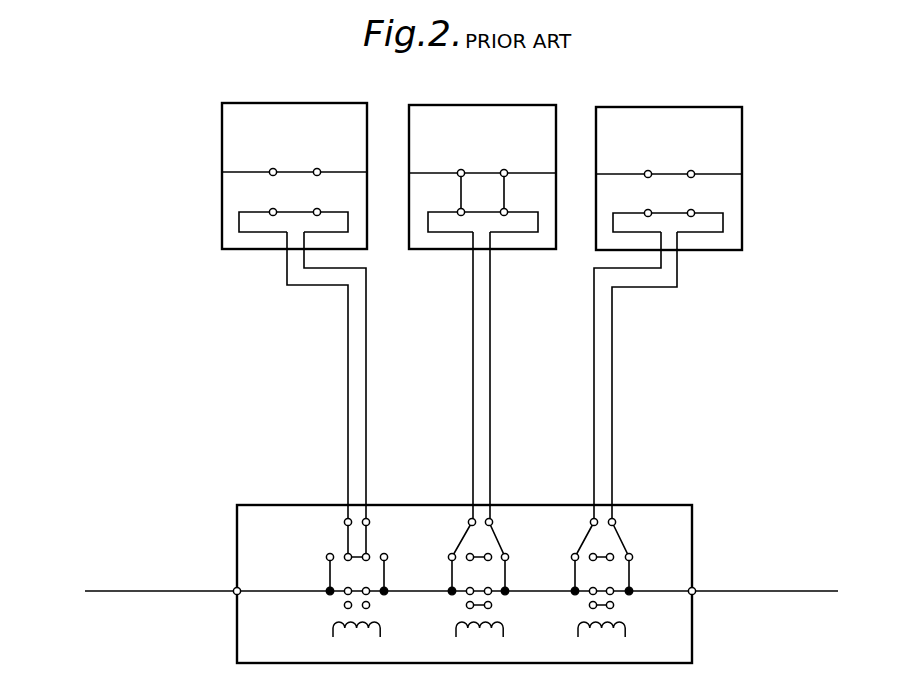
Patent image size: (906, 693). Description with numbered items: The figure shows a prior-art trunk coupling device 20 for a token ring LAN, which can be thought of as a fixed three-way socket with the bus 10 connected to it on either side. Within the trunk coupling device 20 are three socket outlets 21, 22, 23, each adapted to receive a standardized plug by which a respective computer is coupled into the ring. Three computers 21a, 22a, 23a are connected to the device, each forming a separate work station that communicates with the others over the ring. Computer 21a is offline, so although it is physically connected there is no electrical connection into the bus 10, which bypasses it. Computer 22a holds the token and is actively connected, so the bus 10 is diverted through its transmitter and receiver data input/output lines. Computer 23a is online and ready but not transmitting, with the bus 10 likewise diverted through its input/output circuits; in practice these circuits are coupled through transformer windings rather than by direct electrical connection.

The bus 10 is at (157, 590).
The trunk coupling device 20 is at (467, 552).
The socket outlet 21 is at (343, 569).
The socket outlet 22 is at (475, 571).
The socket outlet 23 is at (612, 574).
The computer 21a is at (293, 112).
The computer 22a is at (507, 120).
The computer 23a is at (692, 115).